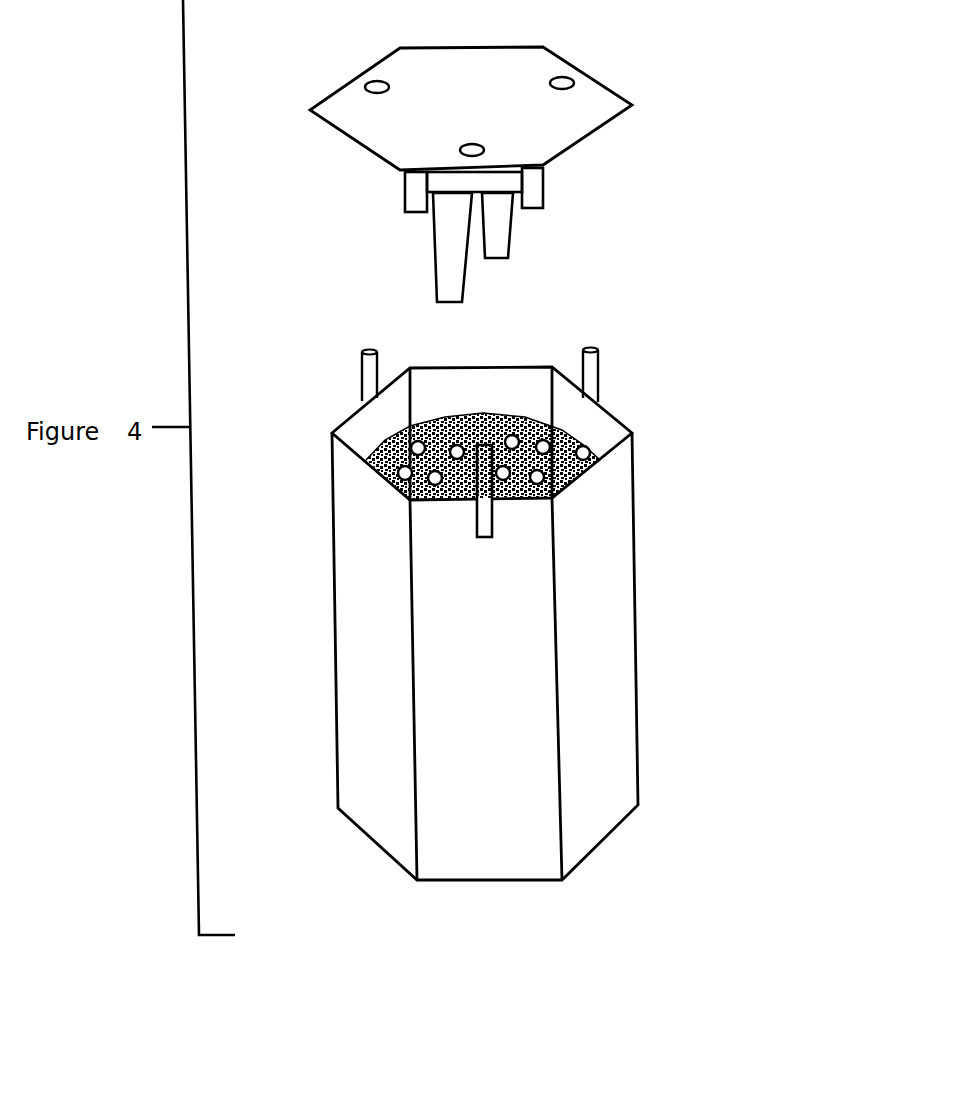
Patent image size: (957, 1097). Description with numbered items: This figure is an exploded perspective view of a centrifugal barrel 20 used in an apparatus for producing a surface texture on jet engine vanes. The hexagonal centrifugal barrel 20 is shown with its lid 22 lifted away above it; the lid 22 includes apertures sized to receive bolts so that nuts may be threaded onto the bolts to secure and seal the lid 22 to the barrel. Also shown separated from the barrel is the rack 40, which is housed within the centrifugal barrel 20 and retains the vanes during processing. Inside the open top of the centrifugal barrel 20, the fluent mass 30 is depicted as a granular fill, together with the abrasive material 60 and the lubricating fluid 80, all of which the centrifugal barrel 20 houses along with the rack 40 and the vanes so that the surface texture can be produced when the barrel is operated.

The centrifugal barrel 20 is at (575, 614).
The lid 22 is at (538, 87).
The rack 40 is at (417, 185).
The fluent mass 30 is at (522, 406).
The lubricating fluid 80 is at (411, 394).
The abrasive material 60 is at (670, 418).